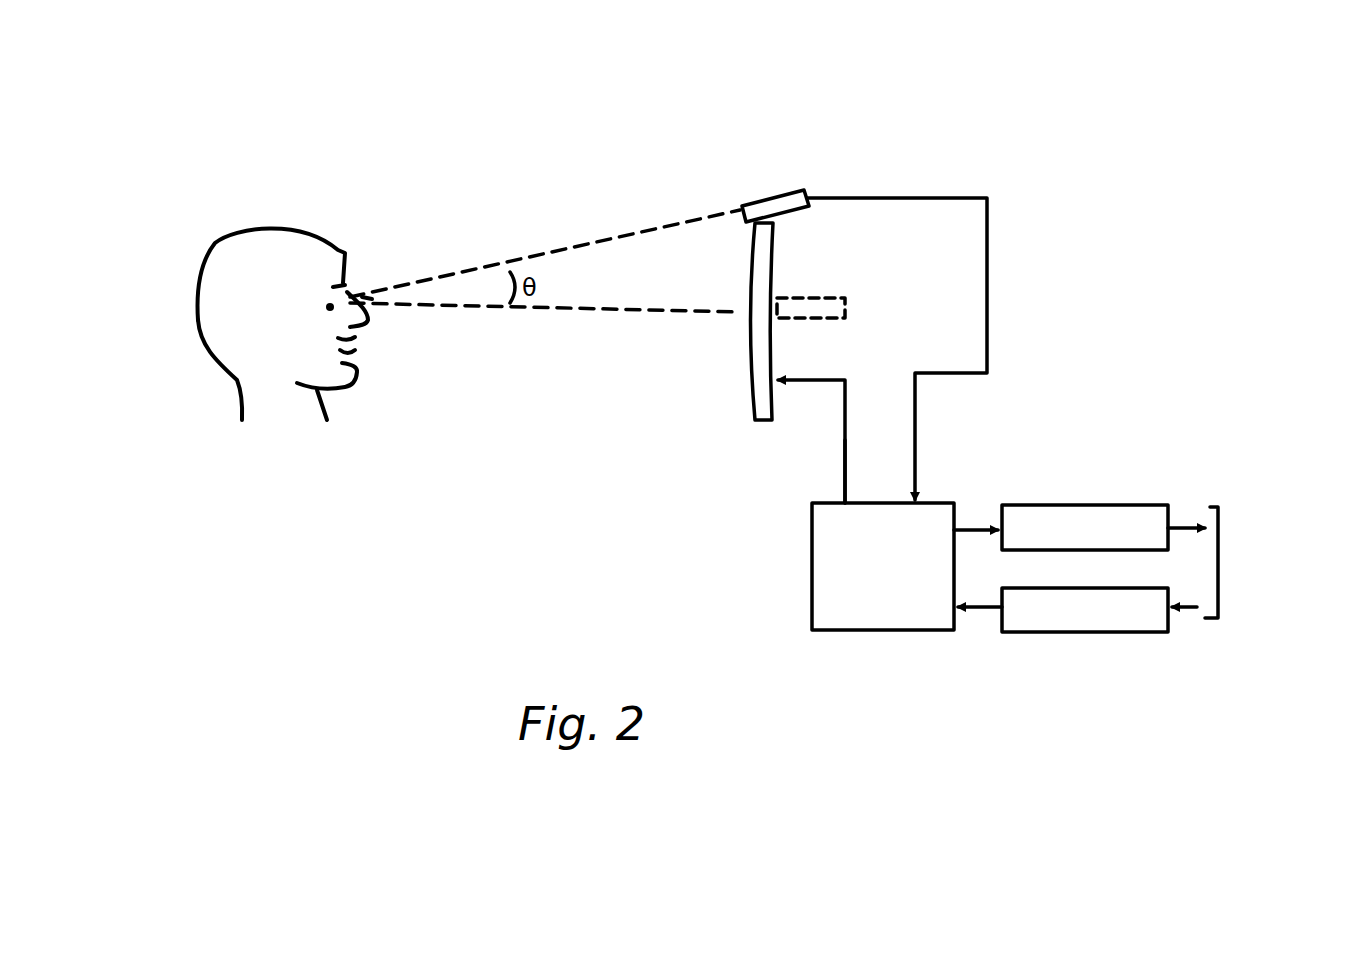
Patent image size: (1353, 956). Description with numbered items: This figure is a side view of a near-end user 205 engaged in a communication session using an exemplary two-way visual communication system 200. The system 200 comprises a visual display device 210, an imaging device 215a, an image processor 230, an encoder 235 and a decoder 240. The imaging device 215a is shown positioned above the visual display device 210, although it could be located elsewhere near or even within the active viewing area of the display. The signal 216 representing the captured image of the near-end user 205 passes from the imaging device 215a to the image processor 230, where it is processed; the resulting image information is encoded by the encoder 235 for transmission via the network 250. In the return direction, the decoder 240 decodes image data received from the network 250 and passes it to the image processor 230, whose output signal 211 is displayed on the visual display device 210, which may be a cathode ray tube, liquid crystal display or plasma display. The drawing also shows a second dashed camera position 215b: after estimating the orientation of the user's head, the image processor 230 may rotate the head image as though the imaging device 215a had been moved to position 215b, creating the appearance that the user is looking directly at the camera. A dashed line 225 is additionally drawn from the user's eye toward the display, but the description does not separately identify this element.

The two-way visual communication system 200 is at (1030, 104).
The near-end user 205 is at (200, 283).
The visual display device 210 is at (742, 412).
The signal output by image processor 211 is at (833, 455).
The imaging device 215a is at (768, 182).
The virtual imaging device position 215b is at (817, 288).
The signal representing the image of the near-end user 216 is at (995, 217).
The line of sight to display 225 is at (647, 322).
The image processor 230 is at (573, 242).
The encoder 235 is at (1079, 527).
The decoder 240 is at (1077, 610).
The network 250 is at (1266, 562).